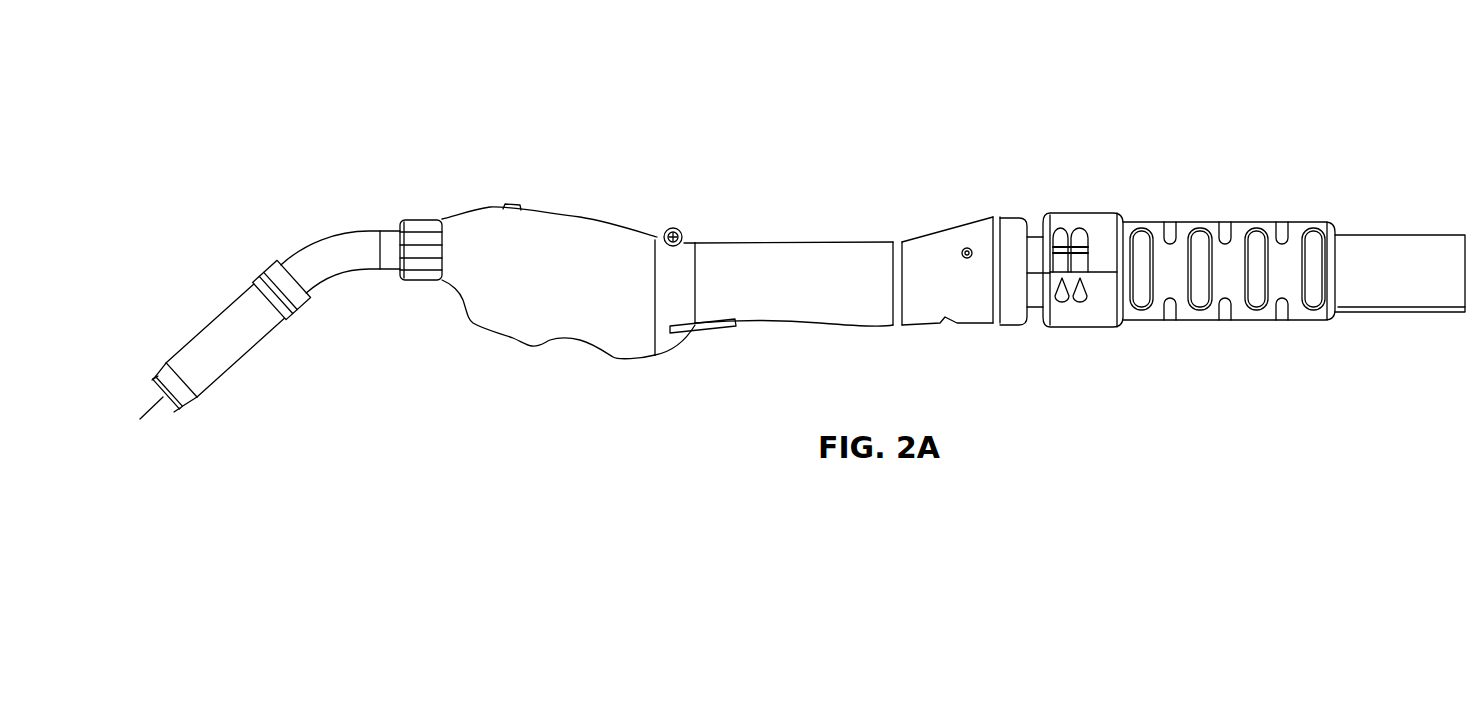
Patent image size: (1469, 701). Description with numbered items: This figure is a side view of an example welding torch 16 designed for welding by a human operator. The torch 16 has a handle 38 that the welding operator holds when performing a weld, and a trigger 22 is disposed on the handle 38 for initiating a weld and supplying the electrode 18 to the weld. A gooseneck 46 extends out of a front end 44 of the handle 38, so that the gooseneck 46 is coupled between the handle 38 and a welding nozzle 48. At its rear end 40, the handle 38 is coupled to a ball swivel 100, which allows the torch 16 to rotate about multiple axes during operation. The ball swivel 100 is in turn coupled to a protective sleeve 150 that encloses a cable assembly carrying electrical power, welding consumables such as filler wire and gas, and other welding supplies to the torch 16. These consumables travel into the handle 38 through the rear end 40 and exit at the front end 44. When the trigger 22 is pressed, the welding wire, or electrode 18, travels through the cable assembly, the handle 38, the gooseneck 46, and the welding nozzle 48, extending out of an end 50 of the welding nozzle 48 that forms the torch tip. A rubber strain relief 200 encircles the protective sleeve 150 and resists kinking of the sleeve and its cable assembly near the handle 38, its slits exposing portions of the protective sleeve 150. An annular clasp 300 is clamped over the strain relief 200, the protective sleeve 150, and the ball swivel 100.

The welding torch 16 is at (432, 58).
The electrode 18 is at (157, 405).
The trigger 22 is at (684, 340).
The handle 38 is at (763, 245).
The rear end 40 is at (1018, 205).
The front end 44 is at (440, 207).
The gooseneck 46 is at (337, 258).
The welding nozzle 48 is at (243, 340).
The end of the welding nozzle 50 is at (146, 384).
The ball swivel 100 is at (1035, 287).
The protective sleeve 150 is at (1403, 300).
The strain relief 200 is at (1250, 223).
The annular clasp 300 is at (1094, 205).